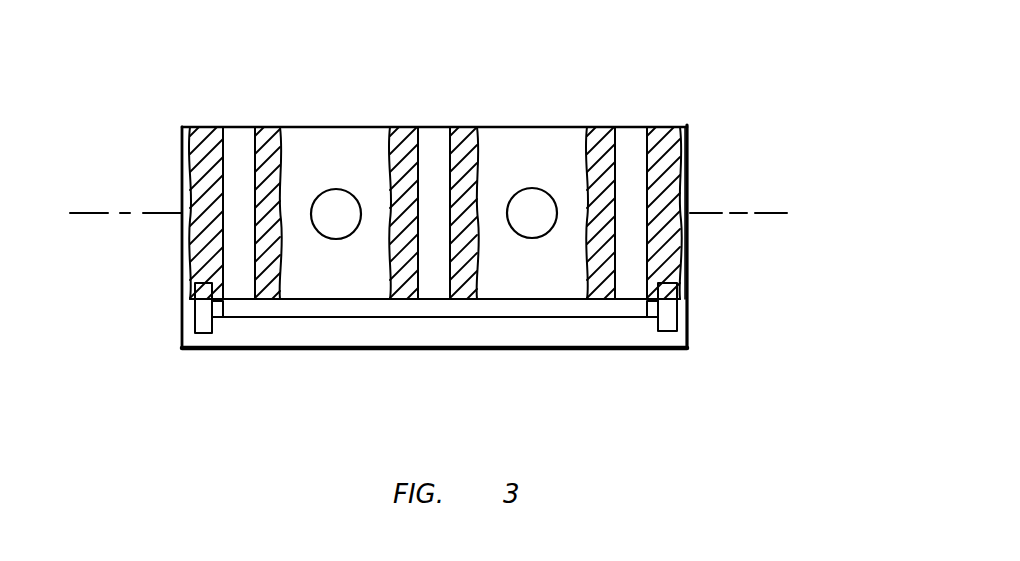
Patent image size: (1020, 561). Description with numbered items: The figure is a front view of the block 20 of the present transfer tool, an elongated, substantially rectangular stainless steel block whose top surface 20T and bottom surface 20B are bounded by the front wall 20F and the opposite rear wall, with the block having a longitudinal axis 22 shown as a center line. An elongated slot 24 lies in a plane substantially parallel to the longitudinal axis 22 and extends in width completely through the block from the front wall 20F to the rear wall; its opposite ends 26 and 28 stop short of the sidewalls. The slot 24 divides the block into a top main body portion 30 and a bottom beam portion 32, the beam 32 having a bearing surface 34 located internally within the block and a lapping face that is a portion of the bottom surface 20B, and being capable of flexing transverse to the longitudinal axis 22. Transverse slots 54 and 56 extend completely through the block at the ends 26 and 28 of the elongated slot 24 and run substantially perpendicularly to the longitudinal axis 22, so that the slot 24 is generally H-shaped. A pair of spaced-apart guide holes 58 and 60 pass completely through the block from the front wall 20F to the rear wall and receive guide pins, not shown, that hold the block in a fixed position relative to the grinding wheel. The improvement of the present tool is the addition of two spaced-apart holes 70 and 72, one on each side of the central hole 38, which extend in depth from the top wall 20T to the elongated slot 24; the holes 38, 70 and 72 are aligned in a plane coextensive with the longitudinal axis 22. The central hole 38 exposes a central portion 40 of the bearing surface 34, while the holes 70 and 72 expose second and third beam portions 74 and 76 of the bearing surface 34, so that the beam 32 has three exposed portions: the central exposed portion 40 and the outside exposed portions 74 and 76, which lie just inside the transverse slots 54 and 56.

The block 20 is at (378, 166).
The top surface 20T is at (295, 152).
The bottom surface 20B is at (270, 348).
The front wall 20F is at (565, 145).
The longitudinal axis 22 is at (125, 213).
The elongated slot 24 is at (383, 307).
The end of elongated slot 26 is at (182, 317).
The end of elongated slot 28 is at (690, 316).
The top main body portion 30 is at (504, 152).
The bottom beam portion 32 is at (527, 333).
The bearing surface 34 is at (332, 315).
The central hole 38 is at (435, 157).
The central exposed portion 40 is at (447, 316).
The transverse slot 54 is at (203, 300).
The transverse slot 56 is at (667, 300).
The guide hole 58 is at (334, 190).
The guide hole 60 is at (537, 189).
The hole 70 is at (237, 148).
The hole 72 is at (632, 148).
The second beam portion 74 is at (229, 308).
The third beam portion 76 is at (621, 310).